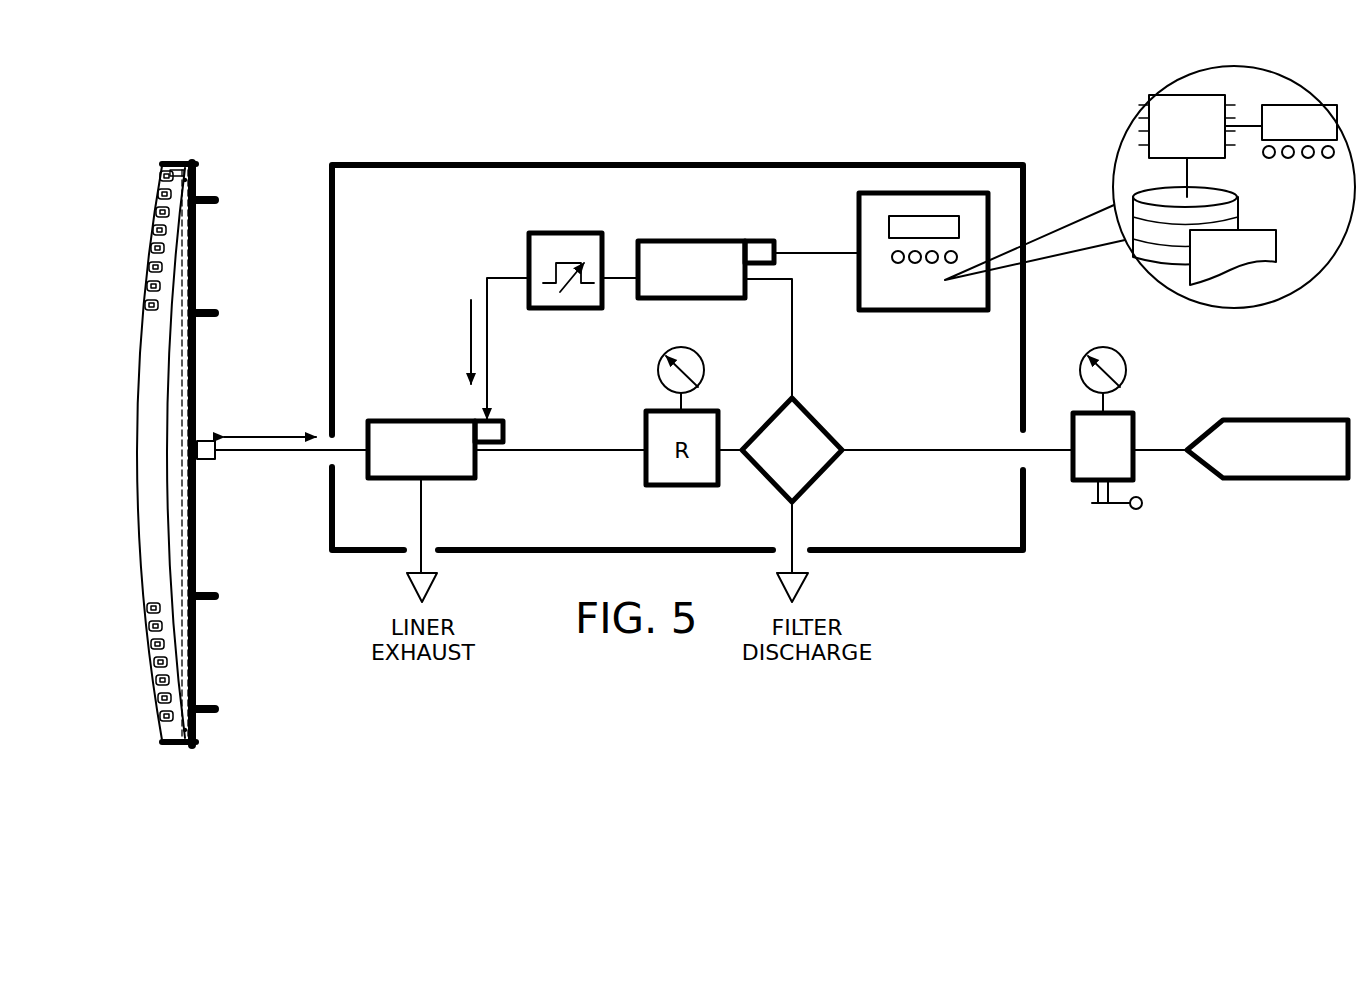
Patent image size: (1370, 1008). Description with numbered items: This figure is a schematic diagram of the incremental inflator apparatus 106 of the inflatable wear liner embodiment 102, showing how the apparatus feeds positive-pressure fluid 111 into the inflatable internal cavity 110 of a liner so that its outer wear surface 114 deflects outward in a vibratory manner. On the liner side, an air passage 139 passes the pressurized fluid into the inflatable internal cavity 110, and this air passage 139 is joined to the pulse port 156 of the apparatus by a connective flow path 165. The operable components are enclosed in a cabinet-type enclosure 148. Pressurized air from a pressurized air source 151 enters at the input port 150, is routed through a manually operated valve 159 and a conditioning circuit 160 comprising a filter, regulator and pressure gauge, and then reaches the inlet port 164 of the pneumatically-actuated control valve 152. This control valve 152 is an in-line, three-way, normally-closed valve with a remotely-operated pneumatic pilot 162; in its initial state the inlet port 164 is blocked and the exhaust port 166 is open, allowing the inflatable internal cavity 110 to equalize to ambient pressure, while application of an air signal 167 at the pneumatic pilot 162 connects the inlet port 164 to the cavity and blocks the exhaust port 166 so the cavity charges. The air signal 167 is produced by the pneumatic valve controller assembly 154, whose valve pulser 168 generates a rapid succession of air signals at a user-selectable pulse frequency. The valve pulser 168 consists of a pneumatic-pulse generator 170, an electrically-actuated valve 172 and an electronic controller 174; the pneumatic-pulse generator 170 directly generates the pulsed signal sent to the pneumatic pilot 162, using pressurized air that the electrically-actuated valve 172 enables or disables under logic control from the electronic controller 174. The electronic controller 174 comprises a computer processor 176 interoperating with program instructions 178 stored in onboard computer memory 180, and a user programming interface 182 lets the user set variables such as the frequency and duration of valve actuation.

The inflatable wear liner embodiment 102 is at (215, 172).
The incremental inflator apparatus 106 is at (1002, 150).
The inflatable internal cavity 110 is at (172, 447).
The positive-pressure fluid 111 is at (250, 437).
The outer wear surface 114 is at (138, 396).
The air passage 139 is at (208, 441).
The cabinet-type enclosure 148 is at (846, 164).
The input port 150 is at (1160, 452).
The pressurized air source 151 is at (1275, 419).
The pneumatically-actuated control valve 152 is at (425, 420).
The pneumatic valve controller assembly 154 is at (508, 253).
The pulse port 156 is at (322, 464).
The manually operated valve 159 is at (1103, 505).
The conditioning circuit 160 is at (840, 405).
The pneumatic pilot 162 is at (503, 423).
The inlet port 164 is at (487, 455).
The flow path 165 is at (282, 455).
The exhaust port 166 is at (424, 498).
The air signal 167 is at (468, 328).
The valve pulser 168 is at (512, 235).
The pneumatic-pulse generator 170 is at (545, 232).
The electrically-actuated valve 172 is at (660, 240).
The electronic controller 174 is at (900, 312).
The computer processor 176 is at (1178, 100).
The program instructions 178 is at (1240, 268).
The computer memory 180 is at (1225, 194).
The user programming interface 182 is at (960, 226).